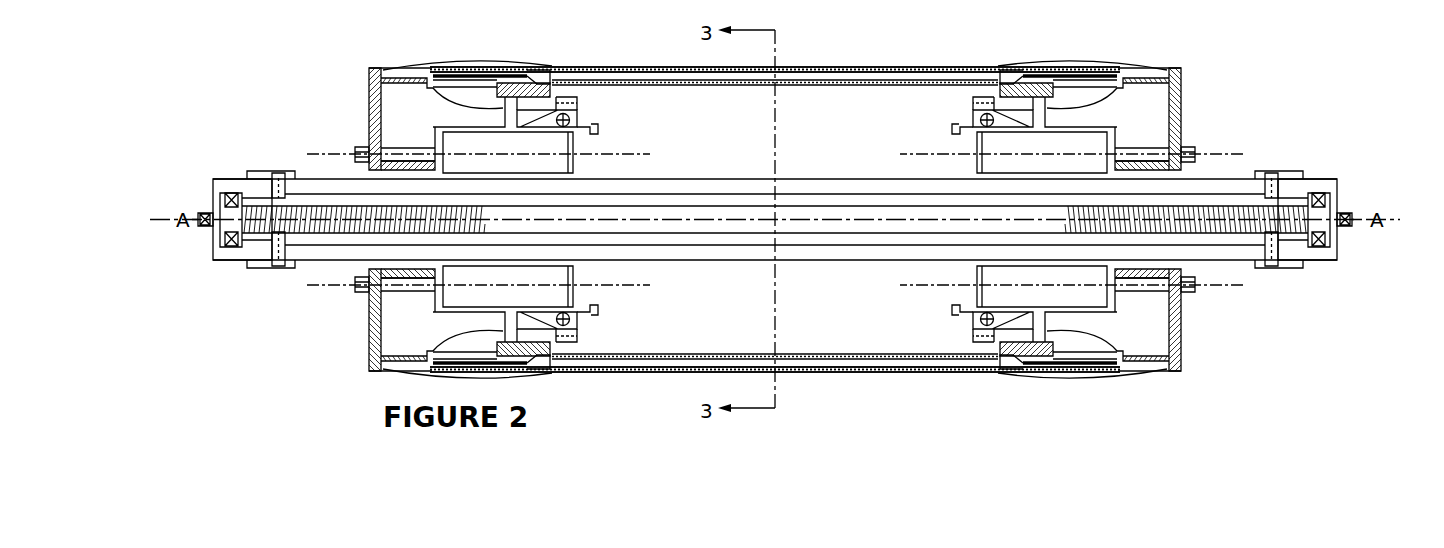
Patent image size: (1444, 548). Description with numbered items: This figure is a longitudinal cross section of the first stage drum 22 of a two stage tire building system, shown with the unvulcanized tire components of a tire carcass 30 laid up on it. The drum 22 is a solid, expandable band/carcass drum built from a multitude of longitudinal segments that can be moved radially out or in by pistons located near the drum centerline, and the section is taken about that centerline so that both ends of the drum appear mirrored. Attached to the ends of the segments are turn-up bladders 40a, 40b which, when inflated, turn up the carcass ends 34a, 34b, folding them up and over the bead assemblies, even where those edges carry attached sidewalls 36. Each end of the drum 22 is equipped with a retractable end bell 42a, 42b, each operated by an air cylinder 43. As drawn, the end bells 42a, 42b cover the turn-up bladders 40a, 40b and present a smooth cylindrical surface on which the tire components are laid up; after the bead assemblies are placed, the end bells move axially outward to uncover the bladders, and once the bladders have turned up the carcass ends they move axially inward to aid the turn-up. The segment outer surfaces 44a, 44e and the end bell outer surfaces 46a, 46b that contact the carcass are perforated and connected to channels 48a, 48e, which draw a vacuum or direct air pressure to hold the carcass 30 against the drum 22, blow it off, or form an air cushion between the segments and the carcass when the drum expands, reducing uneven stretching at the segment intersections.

The first stage drum 22 is at (876, 47).
The tire carcass 30 is at (840, 48).
The carcass end 34a is at (435, 62).
The carcass end 34b is at (1123, 65).
The sidewall 36 is at (447, 67).
The turn-up bladder 40a is at (467, 80).
The turn-up bladder 40b is at (1070, 72).
The end bell 42a is at (370, 117).
The end bell 42b is at (1180, 115).
The air cylinder 43 is at (576, 163).
The segment outer surface 44a is at (633, 67).
The segment outer surface 44e is at (665, 370).
The end bell outer surface 46a is at (381, 68).
The end bell outer surface 46b is at (1160, 67).
The channel 48a is at (390, 77).
The channel 48e is at (370, 358).